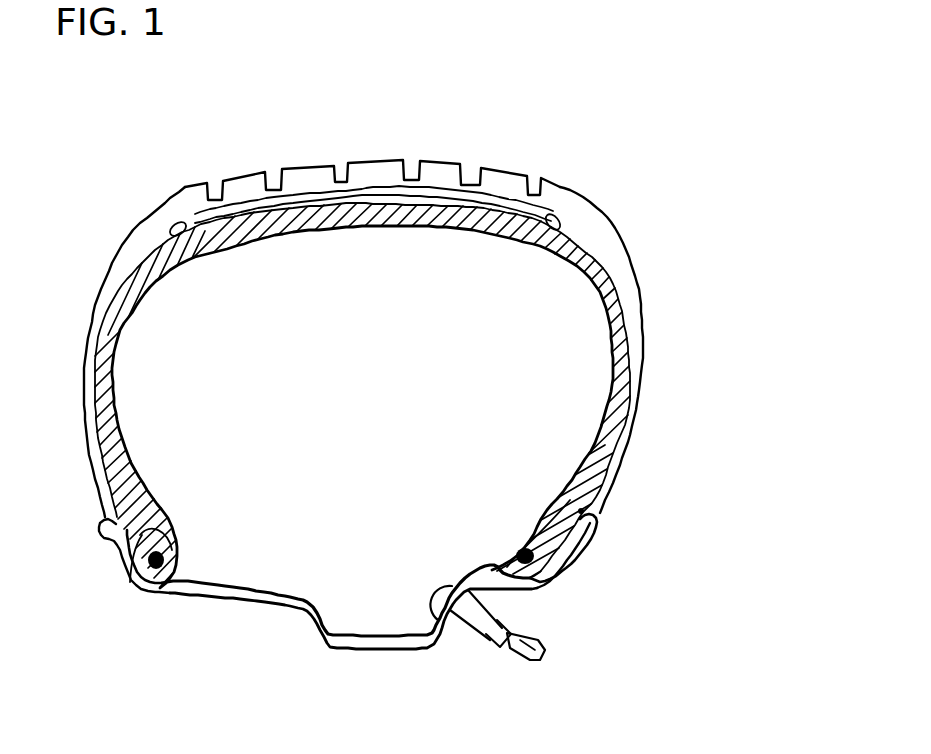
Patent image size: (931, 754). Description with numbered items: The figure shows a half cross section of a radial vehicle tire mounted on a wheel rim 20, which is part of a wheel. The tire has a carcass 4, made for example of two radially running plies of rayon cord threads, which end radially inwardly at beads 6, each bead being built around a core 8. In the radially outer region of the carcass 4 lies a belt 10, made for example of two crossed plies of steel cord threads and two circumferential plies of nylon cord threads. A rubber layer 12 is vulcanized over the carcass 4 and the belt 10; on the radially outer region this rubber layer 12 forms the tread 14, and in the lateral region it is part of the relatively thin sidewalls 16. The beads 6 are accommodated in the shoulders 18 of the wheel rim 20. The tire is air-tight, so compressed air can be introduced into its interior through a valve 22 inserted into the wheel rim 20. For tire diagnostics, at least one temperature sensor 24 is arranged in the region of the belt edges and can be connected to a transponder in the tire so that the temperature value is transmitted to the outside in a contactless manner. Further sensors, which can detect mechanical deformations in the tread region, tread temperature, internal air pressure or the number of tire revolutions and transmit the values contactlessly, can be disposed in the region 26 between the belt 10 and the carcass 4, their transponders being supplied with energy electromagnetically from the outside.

The carcass 4 is at (582, 276).
The bead 6 is at (125, 548).
The core 8 is at (153, 577).
The belt 10 is at (550, 216).
The rubber layer 12 is at (645, 300).
The tread 14 is at (372, 169).
The sidewall 16 is at (637, 381).
The shoulder 18 is at (132, 587).
The wheel rim 20 is at (285, 608).
The valve 22 is at (473, 622).
The temperature sensor 24 is at (178, 228).
The region 26 is at (347, 196).